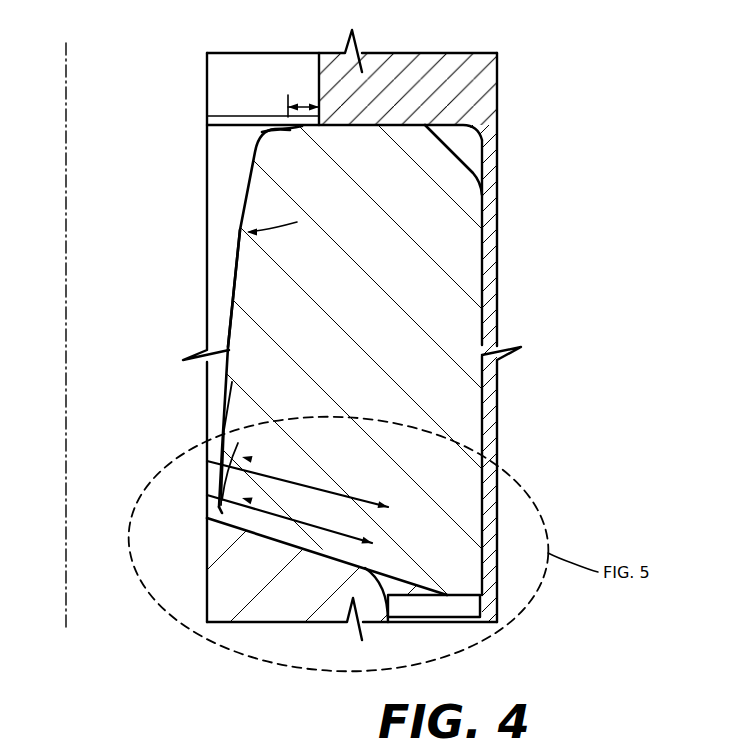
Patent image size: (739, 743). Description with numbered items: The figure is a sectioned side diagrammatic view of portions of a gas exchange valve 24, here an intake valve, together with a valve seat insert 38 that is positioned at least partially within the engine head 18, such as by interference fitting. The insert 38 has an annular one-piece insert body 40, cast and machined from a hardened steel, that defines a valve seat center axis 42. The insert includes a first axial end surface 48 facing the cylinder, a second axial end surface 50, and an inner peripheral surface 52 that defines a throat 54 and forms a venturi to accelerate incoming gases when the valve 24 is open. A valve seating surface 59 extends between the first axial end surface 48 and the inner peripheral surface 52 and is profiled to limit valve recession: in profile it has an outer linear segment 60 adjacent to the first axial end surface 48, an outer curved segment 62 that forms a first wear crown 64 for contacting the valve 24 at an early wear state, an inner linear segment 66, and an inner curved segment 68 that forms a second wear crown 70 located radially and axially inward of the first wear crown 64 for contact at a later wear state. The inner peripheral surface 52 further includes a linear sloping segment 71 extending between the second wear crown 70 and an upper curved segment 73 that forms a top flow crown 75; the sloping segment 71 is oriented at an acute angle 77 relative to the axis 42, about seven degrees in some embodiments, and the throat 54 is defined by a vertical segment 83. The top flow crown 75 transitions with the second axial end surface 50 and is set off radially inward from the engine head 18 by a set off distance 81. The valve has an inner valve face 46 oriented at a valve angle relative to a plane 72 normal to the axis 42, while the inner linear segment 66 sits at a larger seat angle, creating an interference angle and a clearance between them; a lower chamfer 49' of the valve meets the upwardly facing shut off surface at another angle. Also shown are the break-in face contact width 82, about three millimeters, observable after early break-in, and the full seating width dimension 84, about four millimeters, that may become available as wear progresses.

The engine head 18 is at (487, 93).
The gas exchange valve 24 is at (233, 580).
The valve seat insert 38 is at (237, 113).
The insert body 40 is at (439, 313).
The valve seat center axis 42 is at (67, 163).
The inner valve face 46 is at (320, 553).
The first axial end surface 48 is at (462, 596).
The lower chamfer 49' is at (297, 447).
The second axial end surface 50 is at (288, 118).
The inner peripheral surface 52 is at (222, 329).
The throat 54 is at (207, 461).
The valve seating surface 59 is at (371, 568).
The outer linear segment 60 is at (408, 595).
The outer curved segment 62 is at (371, 568).
The first wear crown 64 is at (371, 568).
The inner linear segment 66 is at (320, 553).
The inner curved segment 68 is at (263, 535).
The second wear crown 70 is at (207, 495).
The sloping segment 71 is at (240, 283).
The plane 72 is at (408, 596).
The upper curved segment 73 is at (259, 150).
The top flow crown 75 is at (278, 133).
The acute angle 77 is at (205, 230).
The set off distance 81 is at (305, 102).
The break-in face contact width 82 is at (371, 568).
The vertical segment 83 is at (232, 382).
The full seating width dimension 84 is at (356, 540).